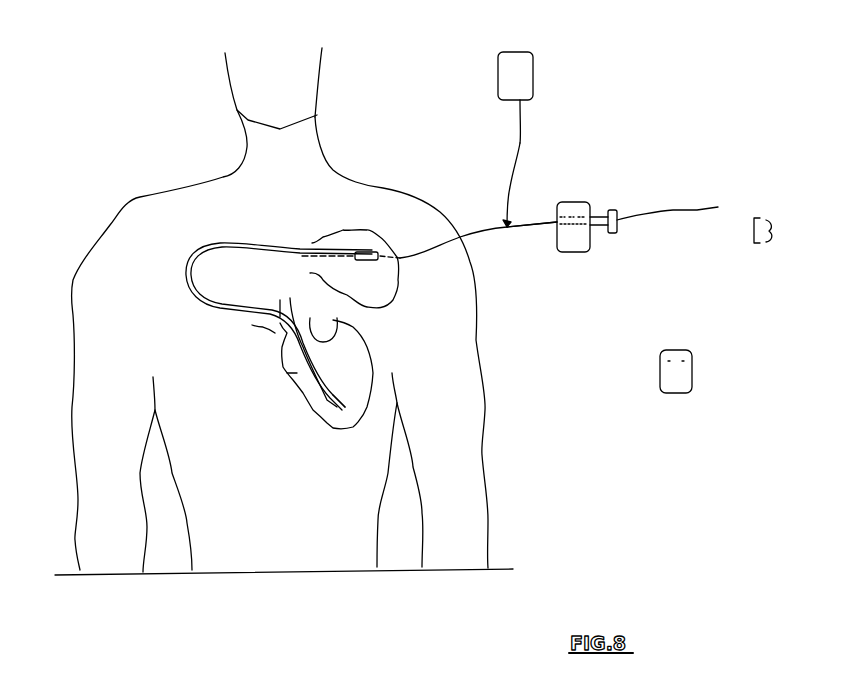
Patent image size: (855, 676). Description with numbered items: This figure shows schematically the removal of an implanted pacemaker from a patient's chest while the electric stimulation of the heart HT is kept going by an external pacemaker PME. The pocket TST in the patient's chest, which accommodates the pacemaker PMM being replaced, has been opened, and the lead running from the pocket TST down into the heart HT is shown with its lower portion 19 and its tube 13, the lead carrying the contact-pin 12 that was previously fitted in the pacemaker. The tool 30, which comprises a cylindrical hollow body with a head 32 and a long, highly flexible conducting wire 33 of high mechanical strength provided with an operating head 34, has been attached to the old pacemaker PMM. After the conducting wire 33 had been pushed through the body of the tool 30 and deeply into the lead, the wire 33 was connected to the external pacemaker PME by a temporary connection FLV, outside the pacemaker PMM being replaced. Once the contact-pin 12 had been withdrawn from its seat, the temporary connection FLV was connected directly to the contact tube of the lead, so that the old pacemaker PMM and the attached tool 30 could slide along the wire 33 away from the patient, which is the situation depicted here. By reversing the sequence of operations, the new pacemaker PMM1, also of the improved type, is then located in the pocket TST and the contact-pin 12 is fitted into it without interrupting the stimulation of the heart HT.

The contact-pin 12 is at (388, 202).
The lead / catheter tube 13 is at (287, 248).
The lead end in heart 19 is at (333, 410).
The tool 30 is at (600, 207).
The head 32 is at (618, 237).
The conducting wire 33 is at (537, 225).
The operating head 34 is at (777, 247).
The external pacemaker PME is at (523, 73).
The temporary connection FLV is at (520, 143).
The pocket TST is at (385, 250).
The pacemaker being replaced PMM is at (577, 243).
The new pacemaker PMM1 is at (682, 380).
The heart HT is at (285, 380).